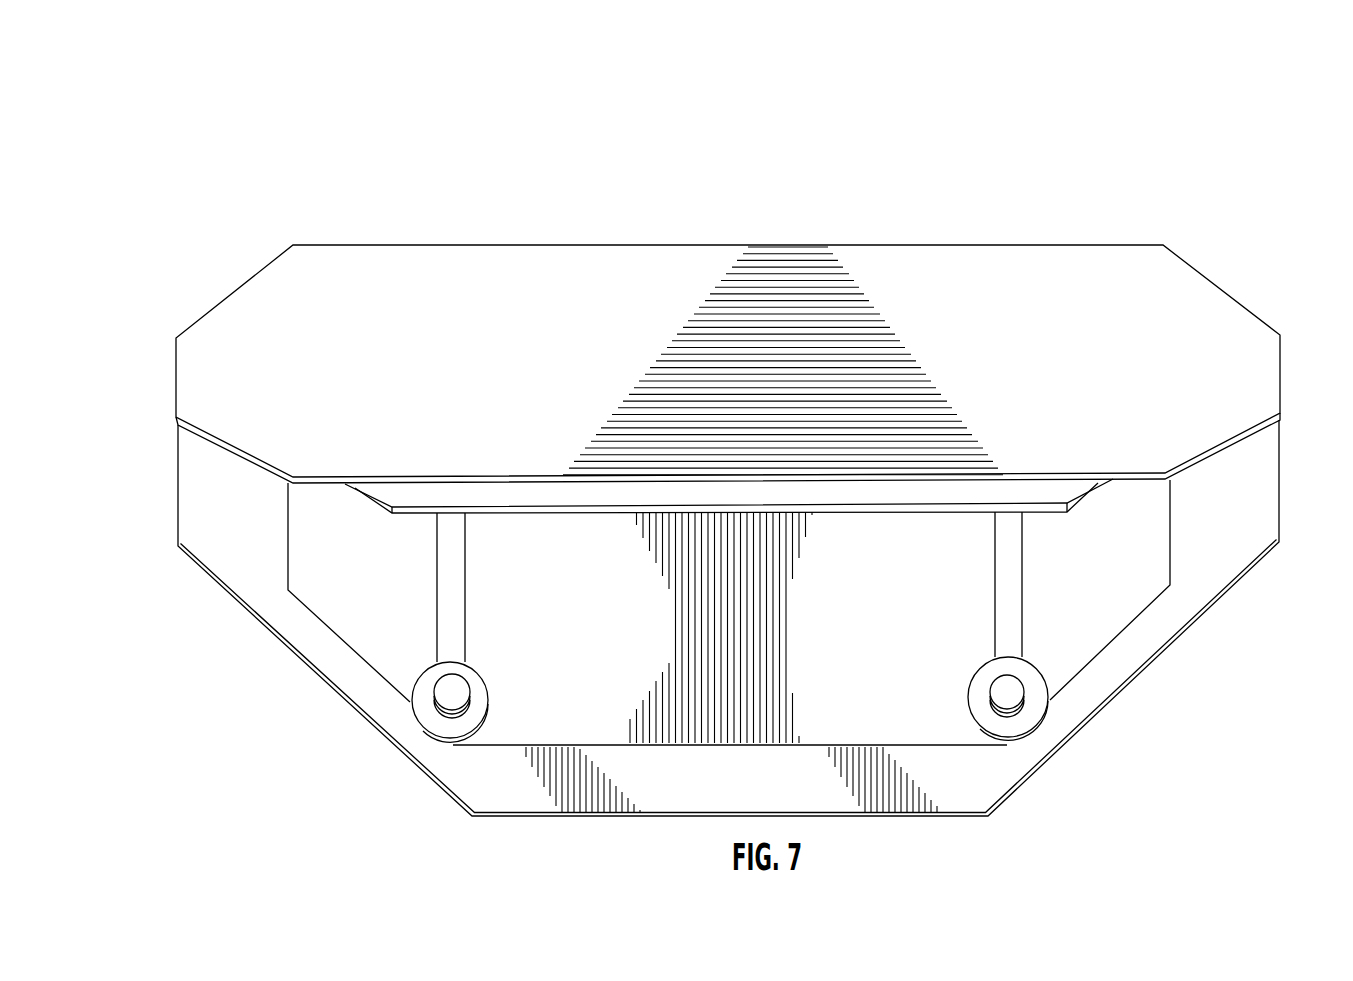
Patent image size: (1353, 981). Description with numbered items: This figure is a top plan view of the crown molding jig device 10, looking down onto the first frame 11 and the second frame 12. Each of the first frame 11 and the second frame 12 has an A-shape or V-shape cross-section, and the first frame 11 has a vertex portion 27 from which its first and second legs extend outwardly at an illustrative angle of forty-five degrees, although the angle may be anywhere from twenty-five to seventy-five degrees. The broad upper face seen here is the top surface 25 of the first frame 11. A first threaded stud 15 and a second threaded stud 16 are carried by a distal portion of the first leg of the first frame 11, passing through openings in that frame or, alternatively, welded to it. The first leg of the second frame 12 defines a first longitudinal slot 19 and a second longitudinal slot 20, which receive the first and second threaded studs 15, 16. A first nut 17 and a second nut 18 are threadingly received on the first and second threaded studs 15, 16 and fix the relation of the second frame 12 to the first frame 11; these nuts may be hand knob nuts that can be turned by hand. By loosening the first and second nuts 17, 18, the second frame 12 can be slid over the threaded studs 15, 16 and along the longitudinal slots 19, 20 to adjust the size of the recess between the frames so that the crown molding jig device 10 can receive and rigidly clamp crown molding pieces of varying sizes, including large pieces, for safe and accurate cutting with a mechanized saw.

The crown molding jig device 10 is at (1019, 138).
The first frame 11 is at (592, 236).
The second frame 12 is at (514, 484).
The first threaded stud 15 is at (450, 690).
The second threaded stud 16 is at (1005, 690).
The first nut 17 is at (428, 718).
The second nut 18 is at (1030, 720).
The first longitudinal slot 19 is at (448, 583).
The second longitudinal slot 20 is at (1007, 571).
The top surface 25 is at (1020, 318).
The vertex portion 27 is at (724, 243).